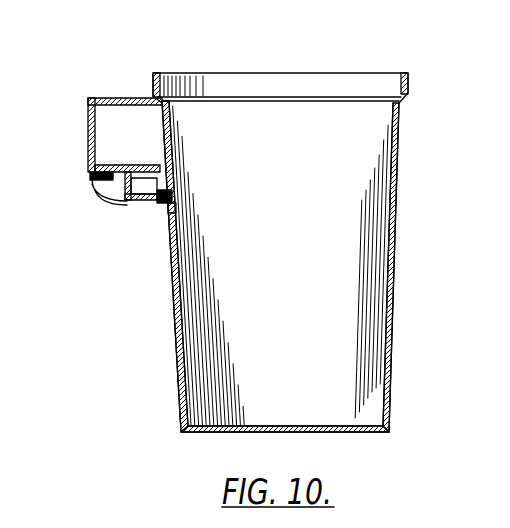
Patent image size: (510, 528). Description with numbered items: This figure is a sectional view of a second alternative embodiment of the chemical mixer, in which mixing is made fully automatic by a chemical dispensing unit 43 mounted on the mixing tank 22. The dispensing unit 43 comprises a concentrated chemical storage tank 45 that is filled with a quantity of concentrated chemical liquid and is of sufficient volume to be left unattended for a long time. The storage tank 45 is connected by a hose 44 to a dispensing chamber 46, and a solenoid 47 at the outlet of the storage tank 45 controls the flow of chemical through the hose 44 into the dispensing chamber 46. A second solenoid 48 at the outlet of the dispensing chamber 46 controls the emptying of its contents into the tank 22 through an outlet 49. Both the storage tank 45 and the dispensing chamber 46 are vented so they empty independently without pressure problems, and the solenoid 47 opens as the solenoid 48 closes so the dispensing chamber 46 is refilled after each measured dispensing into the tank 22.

The tank 22 is at (398, 192).
The chemical dispensing unit 43 is at (134, 133).
The hose 44 is at (100, 192).
The concentrated chemical storage tank 45 is at (110, 124).
The dispensing chamber 46 is at (142, 188).
The solenoid 47 is at (87, 172).
The solenoid 48 is at (172, 194).
The outlet 49 is at (178, 210).